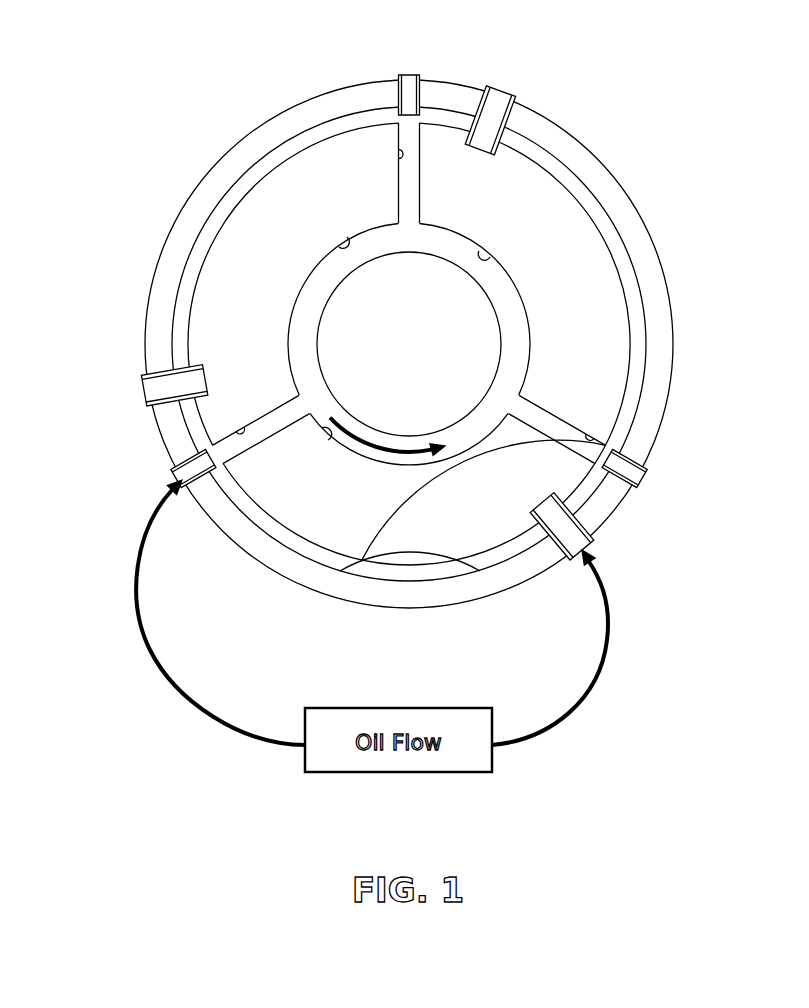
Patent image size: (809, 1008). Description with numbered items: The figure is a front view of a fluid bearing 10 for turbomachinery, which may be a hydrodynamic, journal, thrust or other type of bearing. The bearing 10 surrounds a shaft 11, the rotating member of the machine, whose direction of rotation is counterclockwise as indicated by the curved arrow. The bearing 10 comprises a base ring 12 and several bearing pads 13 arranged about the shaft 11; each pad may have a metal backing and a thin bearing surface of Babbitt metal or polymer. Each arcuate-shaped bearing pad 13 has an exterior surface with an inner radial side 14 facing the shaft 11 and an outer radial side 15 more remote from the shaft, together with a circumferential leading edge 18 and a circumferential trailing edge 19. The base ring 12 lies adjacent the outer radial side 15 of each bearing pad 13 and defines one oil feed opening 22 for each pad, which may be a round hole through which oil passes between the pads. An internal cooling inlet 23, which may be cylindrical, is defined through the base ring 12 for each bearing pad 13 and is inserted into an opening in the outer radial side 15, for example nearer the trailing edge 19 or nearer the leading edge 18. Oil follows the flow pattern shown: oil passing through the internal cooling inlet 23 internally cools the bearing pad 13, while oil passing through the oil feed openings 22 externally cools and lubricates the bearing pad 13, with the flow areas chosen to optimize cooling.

The fluid bearing 10 is at (718, 150).
The shaft 11 is at (503, 326).
The base ring 12 is at (348, 600).
The bearing pad 13 is at (248, 297).
The inner radial side 14 is at (490, 257).
The outer radial side 15 is at (520, 148).
The circumferential leading edge 18 is at (406, 152).
The circumferential trailing edge 19 is at (419, 122).
The oil feed opening 22 is at (411, 75).
The internal cooling inlet 23 is at (500, 90).